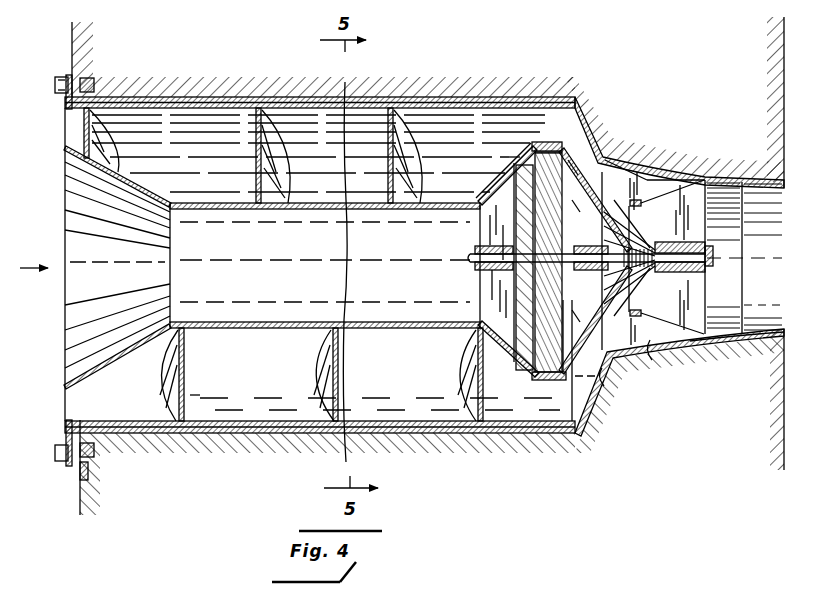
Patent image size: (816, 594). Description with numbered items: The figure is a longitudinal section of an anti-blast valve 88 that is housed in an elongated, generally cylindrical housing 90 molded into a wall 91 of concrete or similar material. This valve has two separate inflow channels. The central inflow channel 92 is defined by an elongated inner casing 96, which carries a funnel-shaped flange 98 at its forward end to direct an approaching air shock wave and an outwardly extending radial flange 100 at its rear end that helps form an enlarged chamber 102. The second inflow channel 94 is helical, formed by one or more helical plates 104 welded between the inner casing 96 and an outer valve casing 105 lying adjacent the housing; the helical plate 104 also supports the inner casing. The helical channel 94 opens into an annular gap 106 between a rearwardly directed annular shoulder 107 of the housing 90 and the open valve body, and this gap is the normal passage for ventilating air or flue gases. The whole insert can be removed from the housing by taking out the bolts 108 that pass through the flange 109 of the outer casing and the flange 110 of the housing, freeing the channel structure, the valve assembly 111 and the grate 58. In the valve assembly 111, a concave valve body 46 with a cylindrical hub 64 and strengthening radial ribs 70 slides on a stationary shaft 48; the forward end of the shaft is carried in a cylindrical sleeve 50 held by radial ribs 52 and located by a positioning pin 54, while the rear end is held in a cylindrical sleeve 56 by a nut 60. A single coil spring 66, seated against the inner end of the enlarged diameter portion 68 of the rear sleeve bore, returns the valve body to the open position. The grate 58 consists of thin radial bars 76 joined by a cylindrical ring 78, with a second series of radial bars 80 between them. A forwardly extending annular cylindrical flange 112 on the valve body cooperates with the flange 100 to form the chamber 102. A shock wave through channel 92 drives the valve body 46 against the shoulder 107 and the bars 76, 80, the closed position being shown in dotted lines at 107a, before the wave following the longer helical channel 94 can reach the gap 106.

The valve body 46 is at (582, 160).
The shaft 48 is at (470, 259).
The cylindrical sleeve 50 is at (541, 275).
The radially extending ribs 52 is at (500, 308).
The positioning pin 54 is at (478, 270).
The cylindrical sleeve 56 is at (675, 246).
The grate 58 is at (694, 276).
The nut 60 is at (709, 249).
The cylindrical hub 64 is at (576, 252).
The coil spring 66 is at (661, 246).
The enlarged diameter portion 68 is at (668, 271).
The radially extending ribs 70 is at (603, 222).
The radially extending bars 76 is at (690, 340).
The cylindrical ring 78 is at (638, 312).
The radial bars 80 is at (653, 345).
The anti-blast valve 88 is at (224, 72).
The housing 90 is at (406, 440).
The wall 91 is at (156, 452).
The inflow channel 92 is at (75, 232).
The inflow channel 94 is at (176, 112).
The inner casing 96 is at (214, 202).
The funnel-shaped flange 98 is at (88, 172).
The radial flange 100 is at (522, 170).
The enlarged chamber 102 is at (526, 156).
The helical plate 104 is at (180, 388).
The outer valve casing 105 is at (282, 420).
The annular gap 106 is at (598, 398).
The annular shoulder 107 is at (572, 396).
The closed position of valve body 107a is at (614, 382).
The bolts 108 is at (56, 80).
The flange 109 is at (68, 462).
The flange 110 is at (80, 480).
The valve assembly 111 is at (496, 222).
The annular cylindrical flange 112 is at (549, 143).